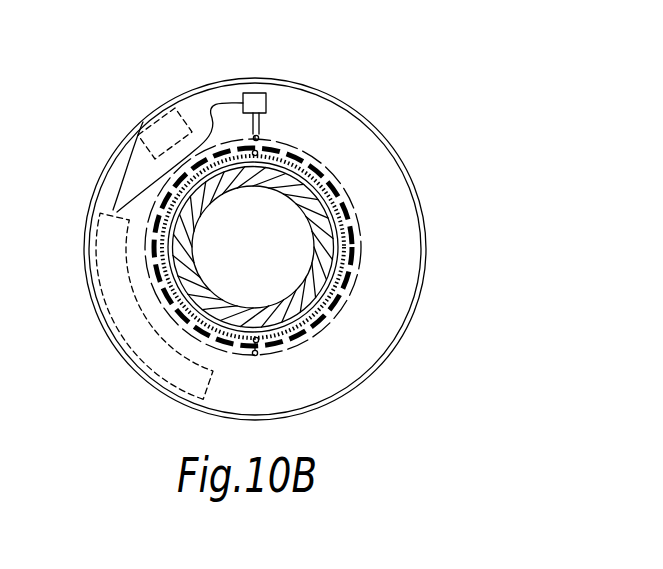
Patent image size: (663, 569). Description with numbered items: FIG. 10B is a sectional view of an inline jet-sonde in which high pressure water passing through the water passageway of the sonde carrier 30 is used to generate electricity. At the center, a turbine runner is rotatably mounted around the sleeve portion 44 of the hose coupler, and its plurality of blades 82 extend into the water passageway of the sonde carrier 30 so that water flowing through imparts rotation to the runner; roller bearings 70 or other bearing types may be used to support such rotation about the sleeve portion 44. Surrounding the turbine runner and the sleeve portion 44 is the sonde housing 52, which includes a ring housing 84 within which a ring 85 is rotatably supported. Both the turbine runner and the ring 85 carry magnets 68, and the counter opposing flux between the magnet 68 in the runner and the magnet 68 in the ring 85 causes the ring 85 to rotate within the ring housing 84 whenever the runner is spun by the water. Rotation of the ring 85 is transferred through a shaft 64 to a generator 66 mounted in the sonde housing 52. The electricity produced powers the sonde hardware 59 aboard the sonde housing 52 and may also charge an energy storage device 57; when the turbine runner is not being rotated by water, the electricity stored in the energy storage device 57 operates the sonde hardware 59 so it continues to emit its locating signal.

The sonde carrier 30 is at (170, 52).
The sonde housing 52 is at (395, 166).
The energy storage device 57 is at (160, 125).
The sonde hardware 59 is at (115, 300).
The shaft 64 is at (263, 118).
The generator 66 is at (257, 93).
The magnet 68 is at (259, 151).
The roller bearings 70 is at (352, 208).
The sleeve portion 44 is at (355, 248).
The blades 82 is at (292, 168).
The ring housing 84 is at (342, 318).
The ring 85 is at (350, 294).